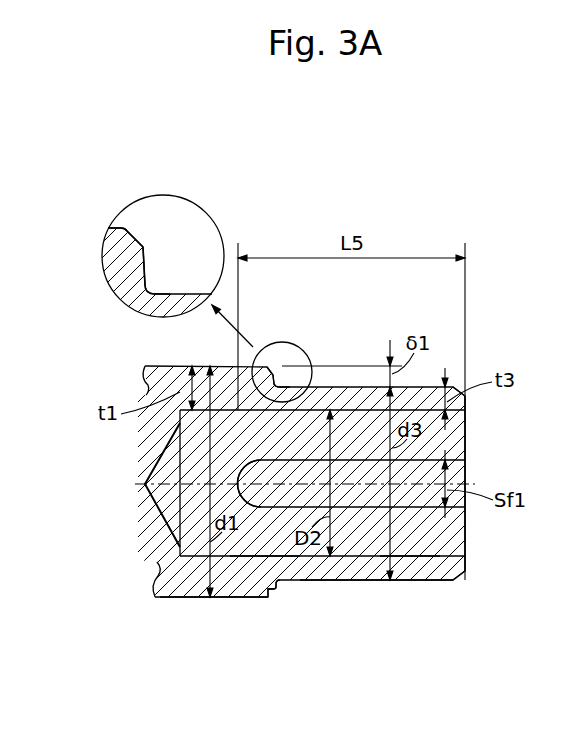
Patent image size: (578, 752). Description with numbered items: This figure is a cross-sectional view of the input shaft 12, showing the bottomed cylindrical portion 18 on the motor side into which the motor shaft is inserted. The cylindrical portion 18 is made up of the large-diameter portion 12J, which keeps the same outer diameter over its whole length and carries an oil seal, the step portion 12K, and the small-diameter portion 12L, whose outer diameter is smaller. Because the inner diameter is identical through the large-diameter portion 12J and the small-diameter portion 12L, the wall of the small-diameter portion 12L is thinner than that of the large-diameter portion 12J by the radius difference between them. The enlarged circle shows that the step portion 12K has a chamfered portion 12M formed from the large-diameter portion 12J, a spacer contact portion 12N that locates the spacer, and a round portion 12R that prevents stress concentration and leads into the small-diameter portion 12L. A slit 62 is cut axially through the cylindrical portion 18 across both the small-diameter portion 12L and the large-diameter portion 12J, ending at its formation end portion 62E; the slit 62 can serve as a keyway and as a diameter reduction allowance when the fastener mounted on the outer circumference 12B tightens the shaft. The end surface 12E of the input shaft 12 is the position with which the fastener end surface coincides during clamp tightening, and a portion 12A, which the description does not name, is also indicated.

The input shaft 12 is at (478, 302).
The inner peripheral surface 12A is at (404, 557).
The outer circumference 12B is at (310, 582).
The end surface 12E is at (466, 568).
The large-diameter portion 12J is at (191, 603).
The step portion 12K is at (172, 257).
The small-diameter portion 12L is at (362, 590).
The chamfered portion 12M is at (138, 240).
The spacer contact portion 12N is at (147, 260).
The round portion 12R is at (170, 290).
The bottomed cylindrical portion 18 is at (262, 555).
The slit 62 is at (408, 507).
The formation end portion 62E is at (240, 483).